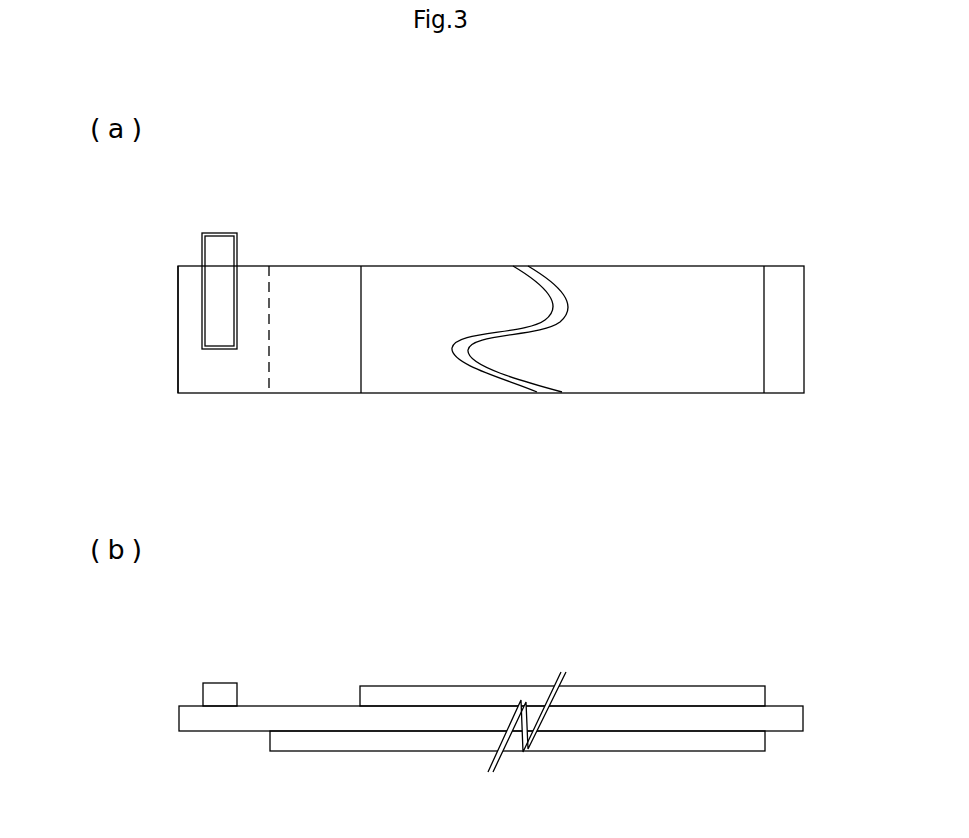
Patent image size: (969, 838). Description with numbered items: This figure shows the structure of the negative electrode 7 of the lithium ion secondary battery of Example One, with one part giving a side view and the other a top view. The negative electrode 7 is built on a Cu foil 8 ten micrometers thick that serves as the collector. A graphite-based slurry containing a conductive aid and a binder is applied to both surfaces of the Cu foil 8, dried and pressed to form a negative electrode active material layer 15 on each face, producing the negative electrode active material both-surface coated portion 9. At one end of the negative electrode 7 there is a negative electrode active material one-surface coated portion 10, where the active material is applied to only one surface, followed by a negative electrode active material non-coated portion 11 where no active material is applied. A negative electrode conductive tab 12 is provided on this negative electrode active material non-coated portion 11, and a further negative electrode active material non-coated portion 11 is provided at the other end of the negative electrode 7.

The negative electrode 7 is at (172, 308).
The Cu foil 8 is at (738, 720).
The negative electrode active material both-surface coated portion 9 is at (392, 285).
The negative electrode active material one-surface coated portion 10 is at (319, 378).
The negative electrode active material non-coated portion 11 is at (205, 360).
The negative electrode conductive tab 12 is at (223, 248).
The negative electrode active material layer 15 is at (610, 687).